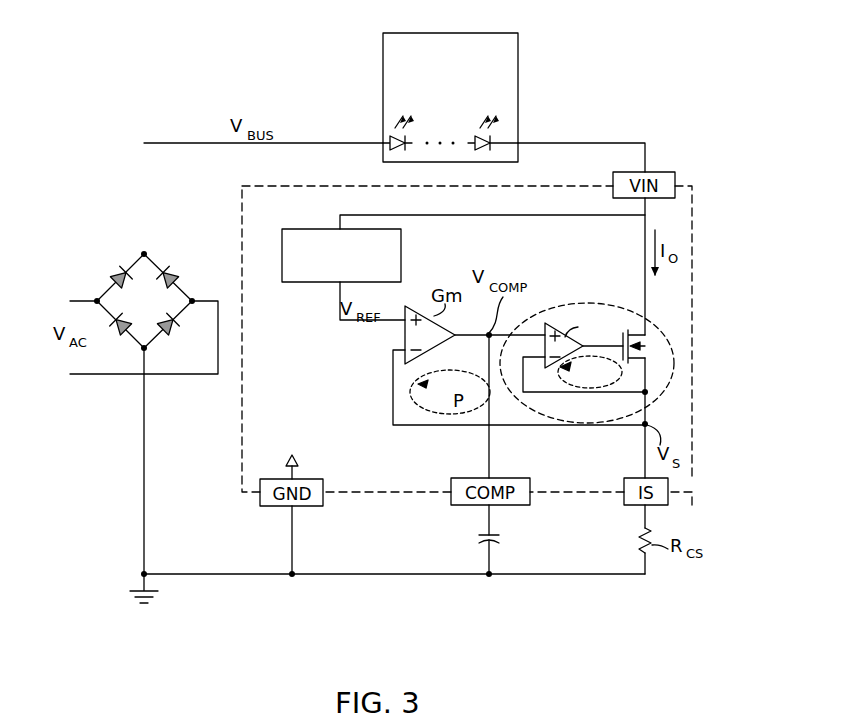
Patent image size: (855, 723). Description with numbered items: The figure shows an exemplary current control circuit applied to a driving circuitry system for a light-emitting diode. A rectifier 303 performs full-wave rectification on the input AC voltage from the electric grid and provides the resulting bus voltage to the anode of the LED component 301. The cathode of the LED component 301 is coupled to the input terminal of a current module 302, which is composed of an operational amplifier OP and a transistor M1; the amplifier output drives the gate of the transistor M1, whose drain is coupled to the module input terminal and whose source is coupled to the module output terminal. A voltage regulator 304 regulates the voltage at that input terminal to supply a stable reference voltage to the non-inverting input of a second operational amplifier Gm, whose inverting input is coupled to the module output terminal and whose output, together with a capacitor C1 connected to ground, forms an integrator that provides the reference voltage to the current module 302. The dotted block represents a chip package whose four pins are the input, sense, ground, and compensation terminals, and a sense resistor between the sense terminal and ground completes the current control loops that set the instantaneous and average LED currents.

The LED component 301 is at (383, 33).
The current module 302 is at (591, 337).
The rectifier 303 is at (128, 252).
The voltage regulator 304 is at (401, 252).
The transistor M1 is at (647, 342).
The capacitor C1 is at (503, 539).